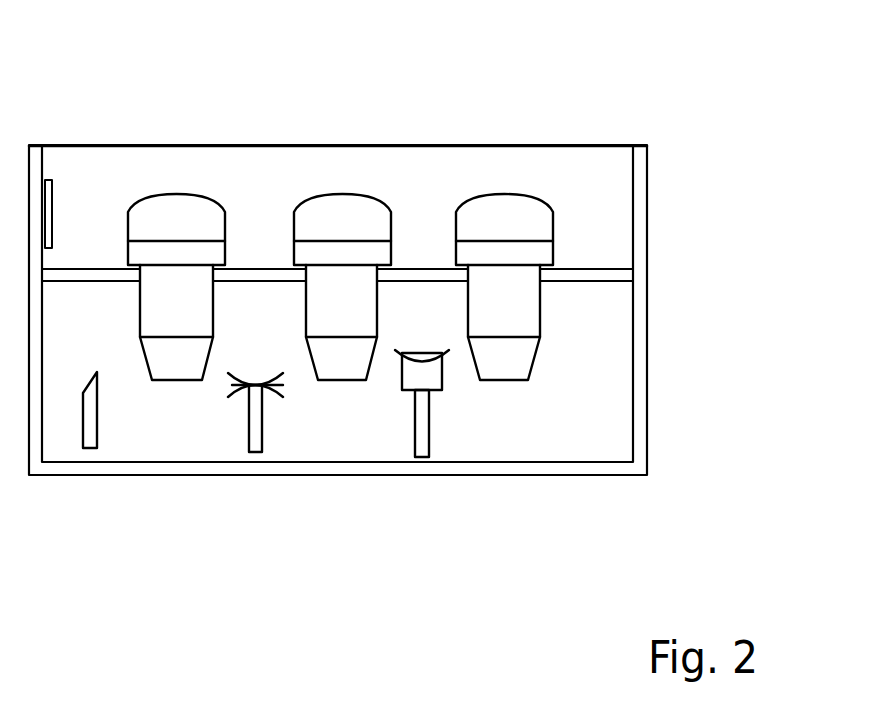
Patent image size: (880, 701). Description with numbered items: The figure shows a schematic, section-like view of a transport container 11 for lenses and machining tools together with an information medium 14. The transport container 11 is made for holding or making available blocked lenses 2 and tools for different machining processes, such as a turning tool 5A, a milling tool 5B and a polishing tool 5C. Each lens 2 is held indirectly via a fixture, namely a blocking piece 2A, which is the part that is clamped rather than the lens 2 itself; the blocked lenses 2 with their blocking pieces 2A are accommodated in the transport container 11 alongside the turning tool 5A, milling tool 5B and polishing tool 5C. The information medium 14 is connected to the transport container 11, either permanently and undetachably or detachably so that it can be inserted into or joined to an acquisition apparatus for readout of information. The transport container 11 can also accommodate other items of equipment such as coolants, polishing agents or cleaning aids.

The transport container 11 is at (656, 192).
The information medium 14 is at (48, 207).
The lens 2 is at (175, 203).
The blocking piece 2A is at (177, 372).
The turning tool 5A is at (90, 437).
The milling tool 5B is at (255, 440).
The polishing tool 5C is at (423, 442).